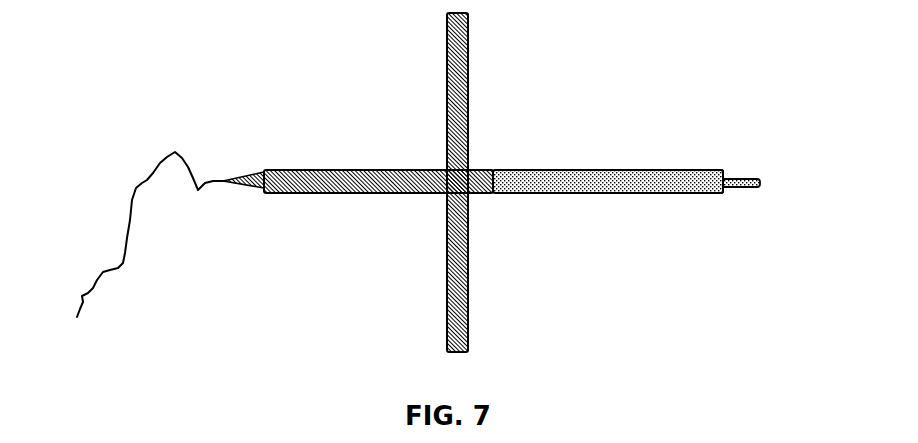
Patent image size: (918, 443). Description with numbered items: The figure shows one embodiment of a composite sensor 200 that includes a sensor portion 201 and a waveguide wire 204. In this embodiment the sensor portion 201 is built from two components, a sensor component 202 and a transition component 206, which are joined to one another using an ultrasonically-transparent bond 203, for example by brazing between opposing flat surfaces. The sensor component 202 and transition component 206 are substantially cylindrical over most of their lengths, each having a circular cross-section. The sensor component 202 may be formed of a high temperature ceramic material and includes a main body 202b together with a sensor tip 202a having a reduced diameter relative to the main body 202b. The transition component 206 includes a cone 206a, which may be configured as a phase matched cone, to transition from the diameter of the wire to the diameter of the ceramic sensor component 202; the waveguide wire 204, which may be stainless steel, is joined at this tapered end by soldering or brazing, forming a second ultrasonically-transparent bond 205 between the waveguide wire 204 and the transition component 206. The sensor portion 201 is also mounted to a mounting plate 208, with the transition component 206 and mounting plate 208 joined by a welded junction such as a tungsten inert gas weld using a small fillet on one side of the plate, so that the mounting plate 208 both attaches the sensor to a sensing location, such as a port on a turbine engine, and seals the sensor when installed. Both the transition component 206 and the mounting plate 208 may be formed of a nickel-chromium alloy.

The composite sensor 200 is at (712, 68).
The sensor portion 201 is at (363, 195).
The sensor component 202 is at (558, 169).
The sensor tip 202a is at (753, 180).
The main body 202b is at (660, 170).
The ultrasonically-transparent bond 203 is at (494, 169).
The waveguide wire 204 is at (190, 165).
The ultrasonically-transparent bond 205 is at (225, 183).
The transition component 206 is at (299, 169).
The cone 206a is at (250, 187).
The mounting plate 208 is at (458, 40).